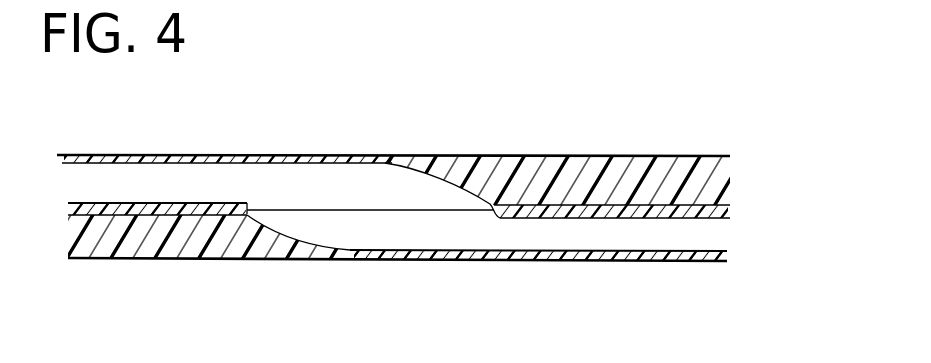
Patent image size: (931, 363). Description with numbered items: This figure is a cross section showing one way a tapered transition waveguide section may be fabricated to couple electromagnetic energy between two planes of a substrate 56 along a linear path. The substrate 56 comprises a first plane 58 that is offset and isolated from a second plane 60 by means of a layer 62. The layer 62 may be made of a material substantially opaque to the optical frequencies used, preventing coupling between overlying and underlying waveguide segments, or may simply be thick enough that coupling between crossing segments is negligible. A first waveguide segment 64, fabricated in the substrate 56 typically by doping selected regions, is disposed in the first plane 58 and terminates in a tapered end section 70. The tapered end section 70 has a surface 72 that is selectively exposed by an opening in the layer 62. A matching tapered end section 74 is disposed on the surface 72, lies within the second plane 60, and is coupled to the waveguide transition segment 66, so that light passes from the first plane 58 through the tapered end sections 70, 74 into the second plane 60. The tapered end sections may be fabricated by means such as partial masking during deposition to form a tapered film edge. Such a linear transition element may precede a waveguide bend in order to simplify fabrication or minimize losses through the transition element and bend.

The substrate 56 is at (365, 154).
The first plane 58 is at (229, 232).
The second plane 60 is at (560, 178).
The layer 62 is at (161, 212).
The first waveguide segment 64 is at (630, 234).
The waveguide transition segment 66 is at (213, 180).
The tapered end section 70 is at (450, 233).
The surface 72 is at (350, 211).
The matching tapered end section 74 is at (405, 176).